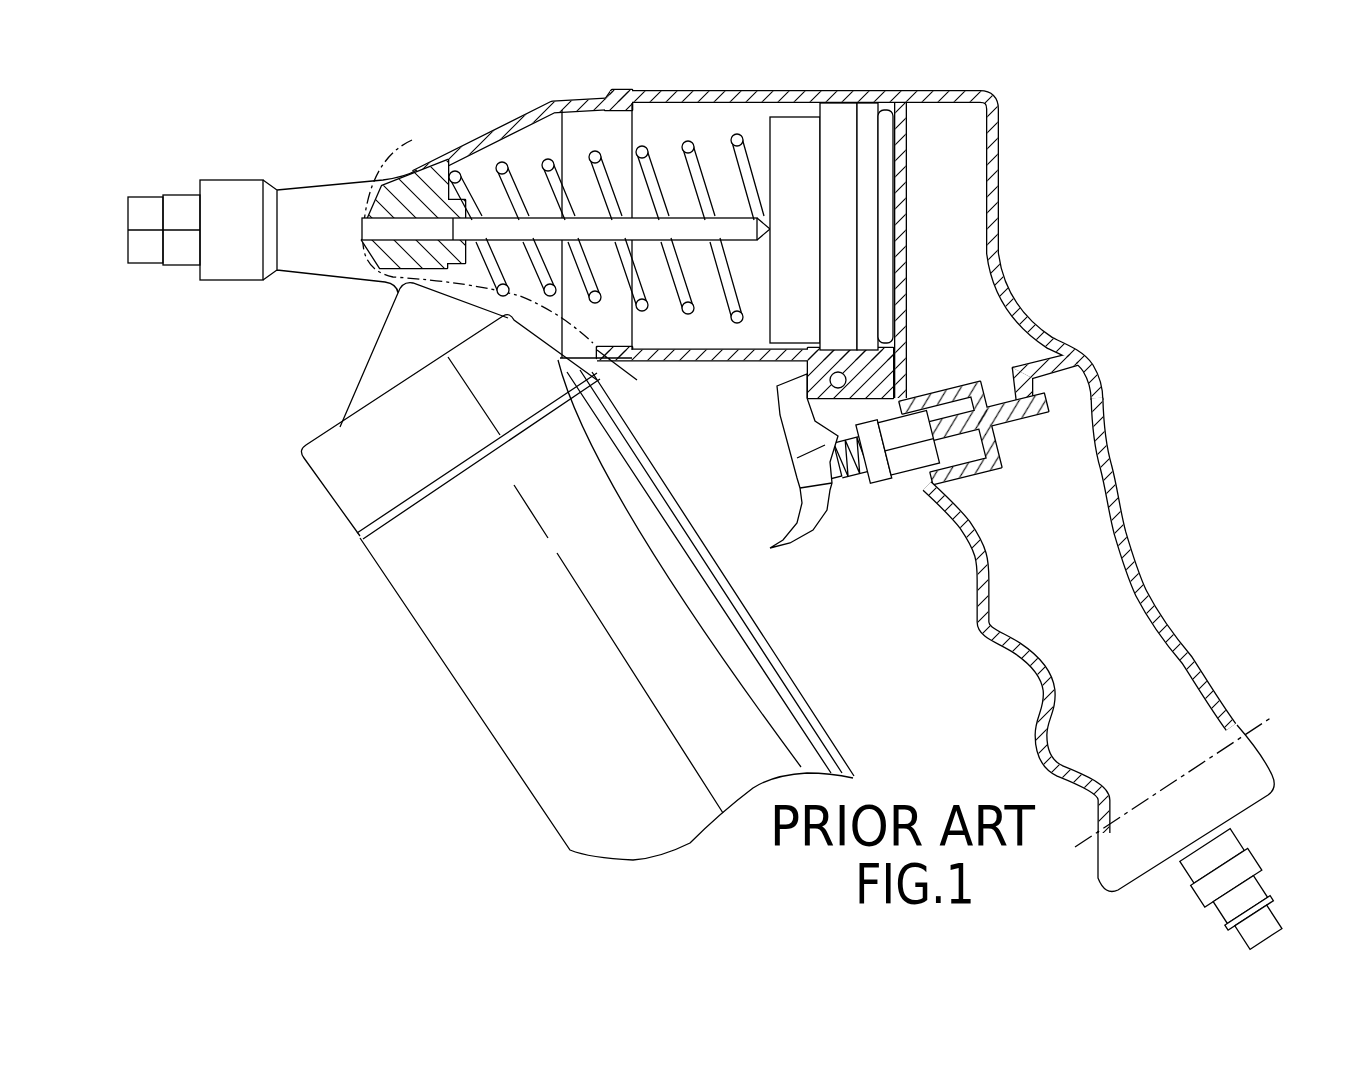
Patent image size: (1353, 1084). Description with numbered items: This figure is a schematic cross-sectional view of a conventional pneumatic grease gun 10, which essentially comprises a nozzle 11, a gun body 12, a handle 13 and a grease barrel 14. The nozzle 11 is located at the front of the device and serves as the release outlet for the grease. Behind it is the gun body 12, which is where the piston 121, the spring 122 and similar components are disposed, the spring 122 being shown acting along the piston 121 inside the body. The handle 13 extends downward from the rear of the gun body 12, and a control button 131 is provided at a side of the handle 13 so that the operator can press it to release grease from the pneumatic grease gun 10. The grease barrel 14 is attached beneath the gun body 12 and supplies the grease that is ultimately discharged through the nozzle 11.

The pneumatic grease gun 10 is at (1010, 162).
The nozzle 11 is at (413, 190).
The gun body 12 is at (858, 102).
The piston 121 is at (787, 140).
The spring 122 is at (600, 170).
The handle 13 is at (1120, 527).
The control button 131 is at (837, 490).
The grease barrel 14 is at (462, 643).